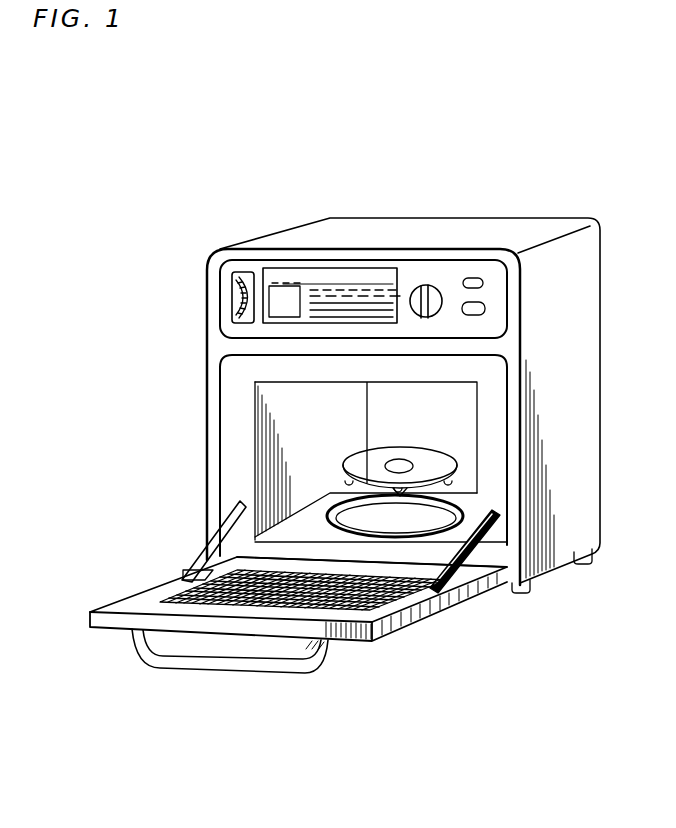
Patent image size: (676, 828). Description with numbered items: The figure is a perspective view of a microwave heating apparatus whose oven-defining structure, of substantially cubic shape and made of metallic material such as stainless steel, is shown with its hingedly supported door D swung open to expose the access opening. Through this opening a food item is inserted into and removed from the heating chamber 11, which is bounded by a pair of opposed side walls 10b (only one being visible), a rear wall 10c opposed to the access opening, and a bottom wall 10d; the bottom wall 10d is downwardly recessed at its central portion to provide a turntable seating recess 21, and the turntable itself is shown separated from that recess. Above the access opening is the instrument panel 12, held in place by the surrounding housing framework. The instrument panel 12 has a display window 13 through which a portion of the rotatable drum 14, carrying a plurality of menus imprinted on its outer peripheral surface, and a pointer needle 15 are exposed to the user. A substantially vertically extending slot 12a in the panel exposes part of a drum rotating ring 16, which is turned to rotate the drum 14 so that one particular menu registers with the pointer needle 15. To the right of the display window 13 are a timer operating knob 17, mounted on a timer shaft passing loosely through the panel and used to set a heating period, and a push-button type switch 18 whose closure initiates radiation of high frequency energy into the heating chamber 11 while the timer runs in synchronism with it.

The side wall 10b is at (270, 412).
The rear wall 10c is at (378, 403).
The bottom wall 10d is at (310, 516).
The heating chamber 11 is at (292, 457).
The instrument panel 12 is at (410, 273).
The slot 12a is at (233, 313).
The display window 13 is at (278, 268).
The rotatable drum 14 is at (360, 287).
The pointer needle 15 is at (303, 293).
The drum rotating ring 16 is at (238, 292).
The timer operating knob 17 is at (437, 278).
The push-button type switch 18 is at (478, 310).
The turntable seating recess 21 is at (442, 528).
The door D is at (347, 617).